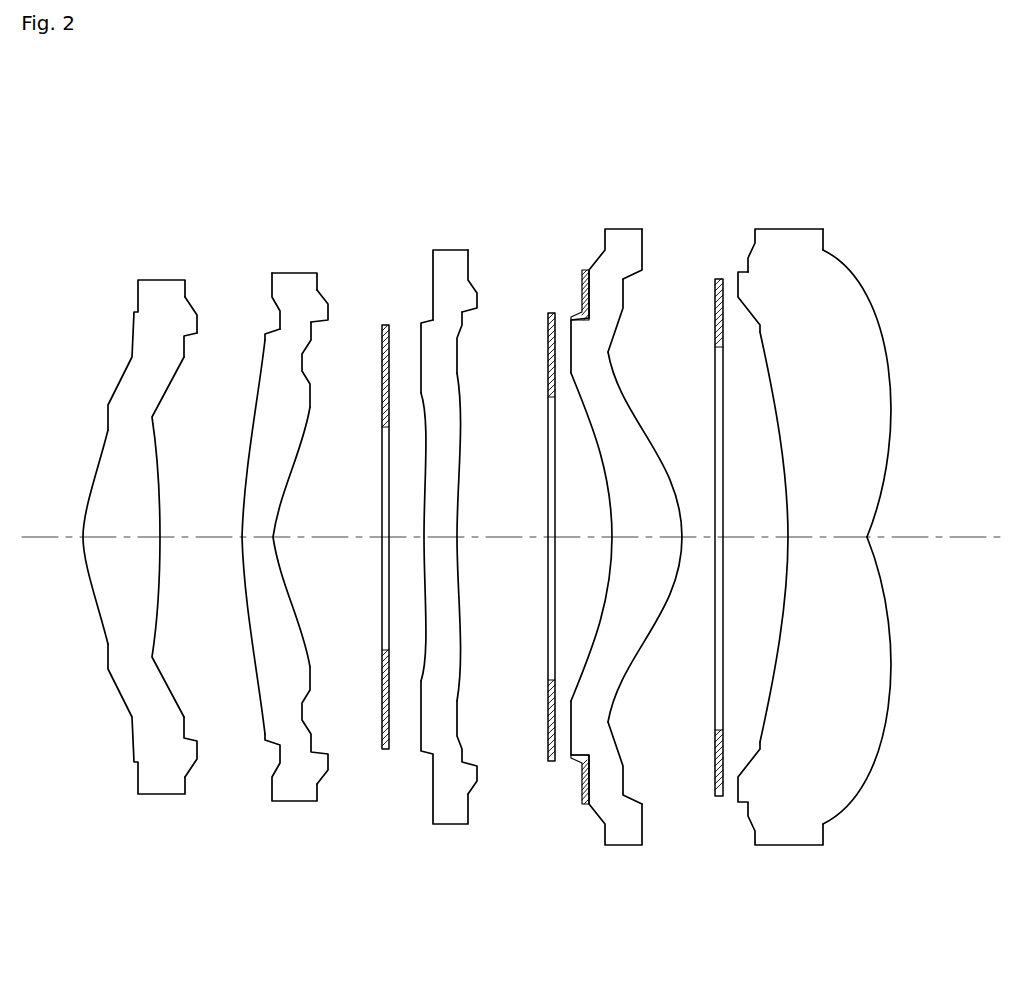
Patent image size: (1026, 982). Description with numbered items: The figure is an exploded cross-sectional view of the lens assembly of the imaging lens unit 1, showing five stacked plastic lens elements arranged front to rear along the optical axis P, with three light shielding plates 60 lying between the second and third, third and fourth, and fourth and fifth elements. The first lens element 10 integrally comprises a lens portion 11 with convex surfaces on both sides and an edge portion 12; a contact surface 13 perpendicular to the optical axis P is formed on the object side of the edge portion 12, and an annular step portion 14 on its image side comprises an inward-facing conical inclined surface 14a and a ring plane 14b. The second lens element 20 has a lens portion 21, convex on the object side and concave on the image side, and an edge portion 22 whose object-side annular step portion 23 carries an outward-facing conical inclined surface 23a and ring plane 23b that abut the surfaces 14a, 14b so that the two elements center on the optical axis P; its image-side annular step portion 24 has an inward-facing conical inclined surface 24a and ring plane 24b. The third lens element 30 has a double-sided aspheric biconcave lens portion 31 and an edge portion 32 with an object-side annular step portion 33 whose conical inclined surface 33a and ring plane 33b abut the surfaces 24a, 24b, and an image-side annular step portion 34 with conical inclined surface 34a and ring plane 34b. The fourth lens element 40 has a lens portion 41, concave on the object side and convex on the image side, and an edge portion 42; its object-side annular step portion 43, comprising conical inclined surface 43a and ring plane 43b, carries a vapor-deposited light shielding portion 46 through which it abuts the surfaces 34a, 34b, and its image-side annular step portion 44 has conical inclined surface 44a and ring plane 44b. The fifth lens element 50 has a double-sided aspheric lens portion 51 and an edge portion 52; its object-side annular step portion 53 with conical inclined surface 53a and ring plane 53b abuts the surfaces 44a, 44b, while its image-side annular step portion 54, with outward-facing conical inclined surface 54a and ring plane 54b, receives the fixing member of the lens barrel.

The imaging lens unit 1 is at (452, 124).
The first lens element 10 is at (155, 280).
The lens portion 11 is at (108, 527).
The edge portion 12 is at (158, 776).
The contact surface 13 is at (133, 340).
The annular step portion 14 is at (211, 537).
The conical inclined surface 14a is at (188, 338).
The ring plane 14b is at (203, 322).
The second lens element 20 is at (293, 273).
The lens portion 21 is at (257, 527).
The edge portion 22 is at (293, 793).
The annular step portion 23 is at (253, 503).
The conical inclined surface 23a is at (267, 333).
The ring plane 23b is at (278, 328).
The annular step portion 24 is at (331, 537).
The conical inclined surface 24a is at (311, 330).
The ring plane 24b is at (330, 322).
The third lens element 30 is at (450, 250).
The lens portion 31 is at (432, 553).
The edge portion 32 is at (450, 805).
The annular step portion 33 is at (405, 505).
The conical inclined surface 33a is at (423, 320).
The ring plane 33b is at (432, 316).
The annular step portion 34 is at (499, 522).
The conical inclined surface 34a is at (463, 317).
The ring plane 34b is at (480, 300).
The fourth lens element 40 is at (618, 229).
The lens portion 41 is at (615, 553).
The edge portion 42 is at (623, 830).
The annular step portion 43 is at (563, 515).
The conical inclined surface 43a is at (570, 296).
The ring plane 43b is at (581, 268).
The annular step portion 44 is at (656, 516).
The conical inclined surface 44a is at (633, 287).
The ring plane 44b is at (645, 263).
The light shielding portion 46 is at (588, 268).
The fifth lens element 50 is at (787, 229).
The lens portion 51 is at (793, 553).
The edge portion 52 is at (788, 830).
The annular step portion 53 is at (740, 508).
The conical inclined surface 53a is at (738, 268).
The ring plane 53b is at (762, 247).
The annular step portion 54 is at (865, 342).
The conical inclined surface 54a is at (835, 255).
The ring plane 54b is at (823, 237).
The light shielding plate 60 is at (383, 752).
The optical axis P is at (885, 537).